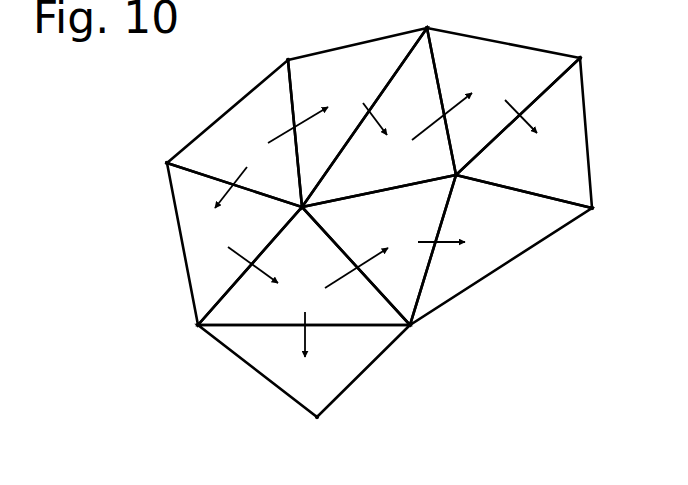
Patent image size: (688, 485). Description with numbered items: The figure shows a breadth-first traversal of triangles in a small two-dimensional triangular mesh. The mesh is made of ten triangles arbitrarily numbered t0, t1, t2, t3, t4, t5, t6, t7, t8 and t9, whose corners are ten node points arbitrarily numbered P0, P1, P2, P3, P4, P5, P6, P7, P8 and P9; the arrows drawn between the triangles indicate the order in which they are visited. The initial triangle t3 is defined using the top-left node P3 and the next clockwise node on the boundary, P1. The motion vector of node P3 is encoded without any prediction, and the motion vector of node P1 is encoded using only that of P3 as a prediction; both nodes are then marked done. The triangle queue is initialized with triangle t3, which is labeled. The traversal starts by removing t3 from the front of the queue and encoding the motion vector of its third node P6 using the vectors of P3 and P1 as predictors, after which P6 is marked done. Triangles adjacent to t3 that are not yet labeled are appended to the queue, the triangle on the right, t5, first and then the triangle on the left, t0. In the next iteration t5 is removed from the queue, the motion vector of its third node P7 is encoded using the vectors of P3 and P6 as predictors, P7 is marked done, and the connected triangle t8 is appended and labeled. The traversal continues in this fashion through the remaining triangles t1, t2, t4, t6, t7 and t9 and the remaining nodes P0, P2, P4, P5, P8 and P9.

The node point P0 is at (433, 15).
The node point P1 is at (283, 36).
The node point P2 is at (591, 42).
The node point P3 is at (150, 164).
The node point P4 is at (488, 164).
The node point P5 is at (613, 214).
The node point P6 is at (304, 236).
The node point P7 is at (184, 337).
The node point P8 is at (426, 345).
The node point P9 is at (325, 437).
The triangle t0 is at (357, 117).
The triangle t1 is at (503, 101).
The triangle t2 is at (379, 117).
The triangle t3 is at (234, 133).
The triangle t4 is at (524, 133).
The triangle t5 is at (234, 244).
The triangle t6 is at (379, 250).
The triangle t7 is at (501, 250).
The triangle t8 is at (304, 266).
The triangle t9 is at (304, 371).